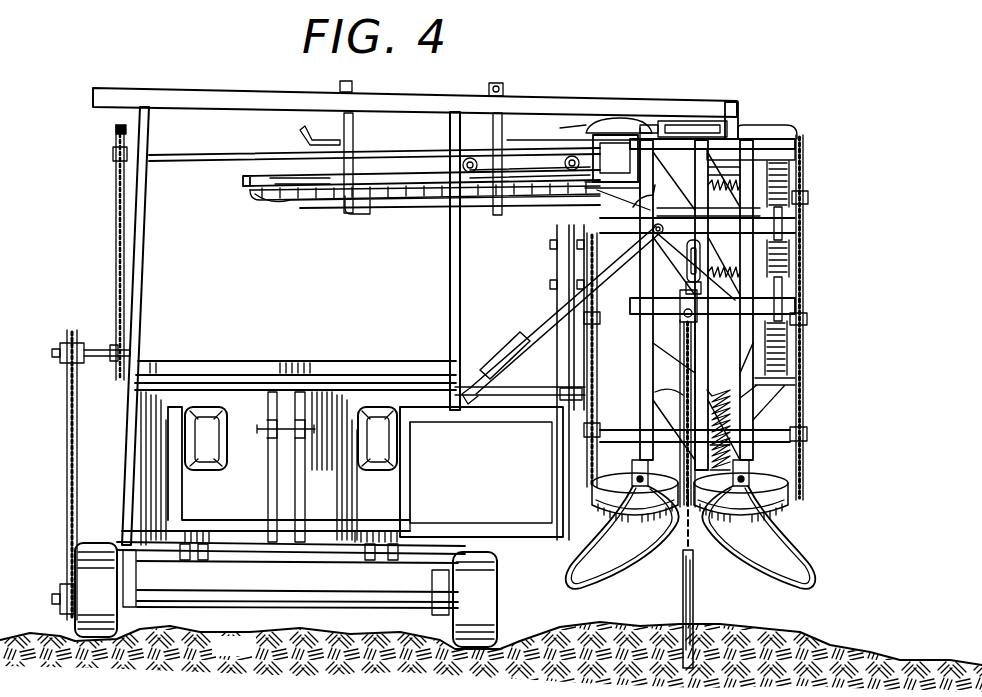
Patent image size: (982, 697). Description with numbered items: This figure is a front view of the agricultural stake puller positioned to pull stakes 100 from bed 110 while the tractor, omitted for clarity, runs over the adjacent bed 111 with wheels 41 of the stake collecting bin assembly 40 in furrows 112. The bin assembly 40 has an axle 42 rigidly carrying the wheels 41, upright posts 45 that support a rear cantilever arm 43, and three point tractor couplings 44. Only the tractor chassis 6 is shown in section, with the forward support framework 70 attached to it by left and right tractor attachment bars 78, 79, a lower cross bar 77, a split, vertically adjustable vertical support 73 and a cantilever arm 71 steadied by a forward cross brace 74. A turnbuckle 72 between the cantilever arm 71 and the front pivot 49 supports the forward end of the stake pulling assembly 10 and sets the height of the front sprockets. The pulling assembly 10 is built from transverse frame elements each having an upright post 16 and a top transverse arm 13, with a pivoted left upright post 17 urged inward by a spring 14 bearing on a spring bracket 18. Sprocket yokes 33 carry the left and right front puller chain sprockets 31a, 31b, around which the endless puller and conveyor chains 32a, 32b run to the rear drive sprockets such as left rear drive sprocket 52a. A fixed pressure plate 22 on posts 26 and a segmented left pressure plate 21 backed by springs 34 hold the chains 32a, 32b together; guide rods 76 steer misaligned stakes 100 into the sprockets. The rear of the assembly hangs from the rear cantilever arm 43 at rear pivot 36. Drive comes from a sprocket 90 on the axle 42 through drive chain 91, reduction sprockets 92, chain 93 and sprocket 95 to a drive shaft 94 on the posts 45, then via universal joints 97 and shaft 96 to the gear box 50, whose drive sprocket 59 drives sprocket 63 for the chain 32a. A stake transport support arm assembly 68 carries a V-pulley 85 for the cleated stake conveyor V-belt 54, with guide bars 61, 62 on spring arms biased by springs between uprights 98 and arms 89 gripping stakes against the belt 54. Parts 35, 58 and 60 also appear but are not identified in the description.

The stake pulling assembly 10 is at (818, 467).
The top transverse arm 13 is at (800, 303).
The spring 14 is at (788, 360).
The upright post 16 is at (640, 420).
The left upright post 17 is at (757, 432).
The spring bracket 18 is at (790, 406).
The left pressure plate 21 is at (694, 460).
The fixed pressure plate 22 is at (678, 400).
The posts 26 is at (684, 455).
The left front puller chain sprocket 31a is at (775, 512).
The right front puller chain sprocket 31b is at (625, 512).
The endless puller and conveyor chain 32a is at (804, 290).
The endless puller and conveyor chain 32b is at (570, 262).
The sprocket yokes 33 is at (634, 465).
The spring 34 is at (735, 420).
The chain block 35 is at (806, 322).
The rear pivot 36 is at (688, 122).
The stake collecting bin assembly 40 is at (233, 326).
The wheels 41 is at (98, 540).
The axle 42 is at (230, 598).
The rear cantilever arm 43 is at (522, 100).
The three point tractor couplings 44 is at (262, 433).
The upright posts 45 is at (448, 262).
The front pivot 49 is at (652, 332).
The gear box 50 is at (622, 135).
The left rear puller chain drive sprocket 52a is at (800, 193).
The endless stake conveyor V-belt 54 is at (290, 200).
The end block 58 is at (742, 130).
The drive sprocket 59 is at (592, 130).
The upper carriage assembly 60 is at (360, 233).
The guide bar 61 is at (302, 133).
The guide bar 62 is at (355, 205).
The sprocket 63 is at (792, 134).
The stake transport support arm assembly 68 is at (245, 180).
The forward support framework 70 is at (535, 550).
The cantilever arm 71 is at (640, 240).
The turnbuckle 72 is at (660, 262).
The vertical support 73 is at (560, 398).
The forward cross brace 74 is at (526, 342).
The guide rods 76 is at (650, 572).
The lower cross bar 77 is at (472, 522).
The left tractor attachment bar 78 is at (400, 478).
The right tractor attachment bar 79 is at (176, 508).
The V-pulley 85 is at (250, 193).
The arms 89 is at (488, 90).
The sprocket 90 is at (60, 604).
The drive chain 91 is at (66, 405).
The reduction sprockets 92 is at (96, 343).
The chain 93 is at (115, 258).
The drive shaft 94 is at (200, 155).
The sprocket 95 is at (115, 130).
The shaft 96 is at (515, 160).
The universal joints 97 is at (478, 160).
The transport support arm uprights 98 is at (352, 118).
The stakes 100 is at (692, 602).
The bed 110 is at (752, 636).
The bed 111 is at (234, 645).
The furrows 112 is at (120, 640).
The tractor chassis 6 is at (228, 420).